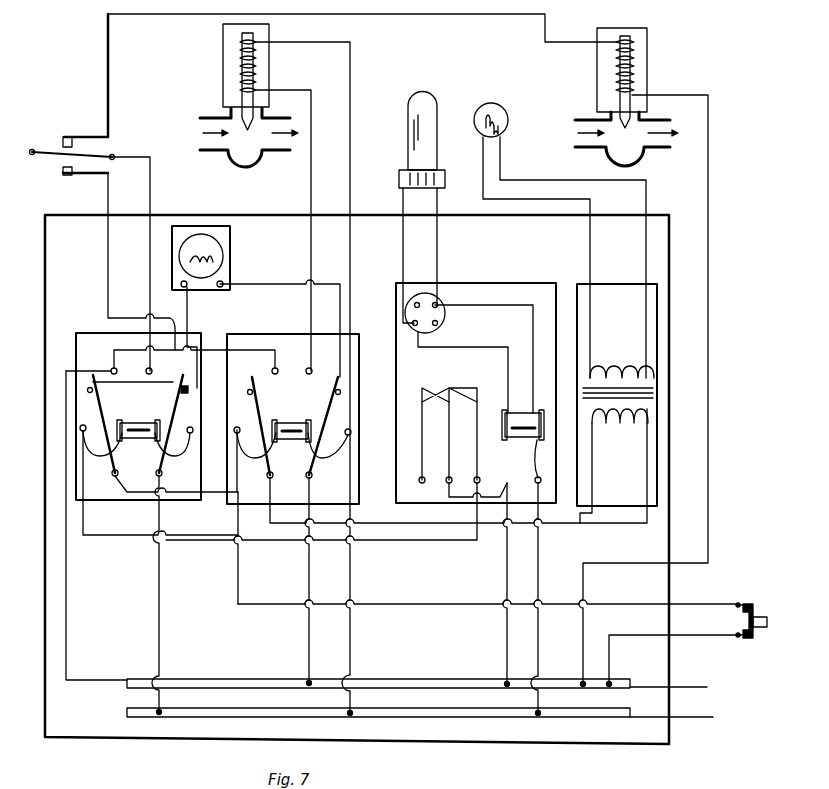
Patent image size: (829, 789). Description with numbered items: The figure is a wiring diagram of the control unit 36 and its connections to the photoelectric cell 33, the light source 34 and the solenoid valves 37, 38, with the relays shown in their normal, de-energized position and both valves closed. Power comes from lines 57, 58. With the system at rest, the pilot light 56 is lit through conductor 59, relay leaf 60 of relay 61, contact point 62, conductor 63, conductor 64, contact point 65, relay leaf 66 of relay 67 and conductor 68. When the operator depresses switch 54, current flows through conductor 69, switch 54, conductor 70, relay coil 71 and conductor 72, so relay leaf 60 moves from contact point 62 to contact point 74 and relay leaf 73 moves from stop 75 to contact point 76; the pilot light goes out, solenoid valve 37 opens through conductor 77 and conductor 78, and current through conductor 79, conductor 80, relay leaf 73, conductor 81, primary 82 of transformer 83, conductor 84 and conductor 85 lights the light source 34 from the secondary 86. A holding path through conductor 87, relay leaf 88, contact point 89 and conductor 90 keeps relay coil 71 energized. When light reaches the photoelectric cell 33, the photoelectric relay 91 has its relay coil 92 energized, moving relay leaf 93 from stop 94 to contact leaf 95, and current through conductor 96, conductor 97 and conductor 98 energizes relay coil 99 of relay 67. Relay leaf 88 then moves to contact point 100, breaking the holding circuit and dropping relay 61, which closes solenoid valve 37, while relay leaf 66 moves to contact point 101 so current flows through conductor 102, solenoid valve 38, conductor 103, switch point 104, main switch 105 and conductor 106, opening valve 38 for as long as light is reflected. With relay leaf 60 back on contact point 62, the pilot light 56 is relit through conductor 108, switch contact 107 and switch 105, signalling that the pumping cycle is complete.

The photoelectric cell 33 is at (414, 97).
The light source 34 is at (500, 108).
The control unit 36 is at (44, 250).
The solenoid valve 37 is at (221, 44).
The solenoid valve 38 is at (649, 56).
The switch 54 is at (762, 594).
The pilot light 56 is at (192, 240).
The line 57 is at (427, 677).
The line 58 is at (427, 706).
The conductor 59 is at (308, 646).
The relay leaf 60 is at (336, 395).
The relay 61 is at (282, 337).
The contact point 62 is at (328, 427).
The conductor 63 is at (257, 283).
The conductor 64 is at (190, 311).
The contact point 65 is at (177, 424).
The relay leaf 66 is at (156, 472).
The relay 67 is at (82, 336).
The conductor 68 is at (162, 613).
The conductor 69 is at (631, 637).
The conductor 70 is at (421, 605).
The relay coil 71 is at (290, 422).
The conductor 72 is at (353, 646).
The relay leaf 73 is at (258, 406).
The contact point 74 is at (312, 371).
The stop 75 is at (248, 396).
The contact point 76 is at (272, 371).
The conductor 77 is at (311, 184).
The conductor 78 is at (351, 158).
The conductor 79 is at (70, 604).
The conductor 80 is at (210, 350).
The conductor 81 is at (379, 523).
The primary 82 is at (607, 426).
The transformer 83 is at (659, 387).
The conductor 84 is at (584, 514).
The conductor 85 is at (541, 645).
The secondary 86 is at (604, 364).
The conductor 87 is at (220, 498).
The relay leaf 88 is at (113, 477).
The contact point 89 is at (90, 394).
The conductor 90 is at (120, 384).
The photoelectric relay 91 is at (481, 289).
The relay coil 92 is at (542, 446).
The relay leaf 93 is at (460, 432).
The stop 94 is at (420, 440).
The contact leaf 95 is at (484, 436).
The conductor 96 is at (505, 640).
The conductor 97 is at (461, 498).
The conductor 98 is at (405, 541).
The relay coil 99 is at (140, 422).
The contact point 100 is at (110, 368).
The contact point 101 is at (146, 370).
The conductor 102 is at (618, 566).
The conductor 103 is at (424, 27).
The switch point 104 is at (64, 136).
The main switch 105 is at (60, 158).
The conductor 106 is at (156, 173).
The switch contact 107 is at (75, 178).
The conductor 108 is at (108, 240).